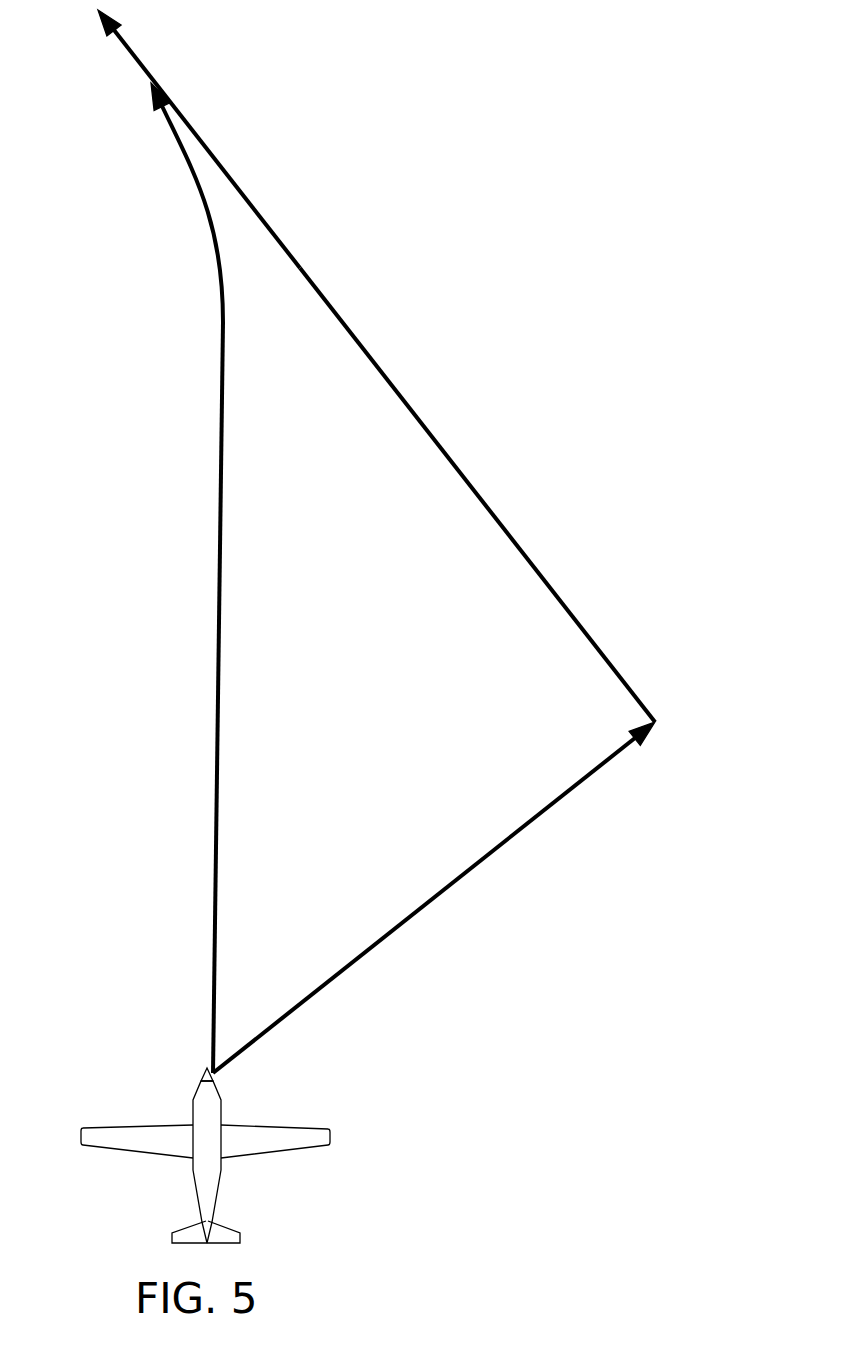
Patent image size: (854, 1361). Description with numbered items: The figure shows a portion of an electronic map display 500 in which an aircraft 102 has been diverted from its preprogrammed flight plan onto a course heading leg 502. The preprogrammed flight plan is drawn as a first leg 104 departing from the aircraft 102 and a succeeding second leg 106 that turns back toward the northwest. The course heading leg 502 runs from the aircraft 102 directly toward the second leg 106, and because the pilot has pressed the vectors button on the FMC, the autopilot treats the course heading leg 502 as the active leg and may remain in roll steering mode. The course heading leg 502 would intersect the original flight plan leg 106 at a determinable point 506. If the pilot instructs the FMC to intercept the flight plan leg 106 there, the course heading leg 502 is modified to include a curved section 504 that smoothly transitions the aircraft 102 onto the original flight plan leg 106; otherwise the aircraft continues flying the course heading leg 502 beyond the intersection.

The map display 500 is at (634, 106).
The aircraft 102 is at (223, 1098).
The first leg 104 is at (408, 920).
The second leg 106 is at (580, 622).
The course heading leg 502 is at (210, 853).
The curved section 504 is at (197, 177).
The determinable point 506 is at (225, 173).